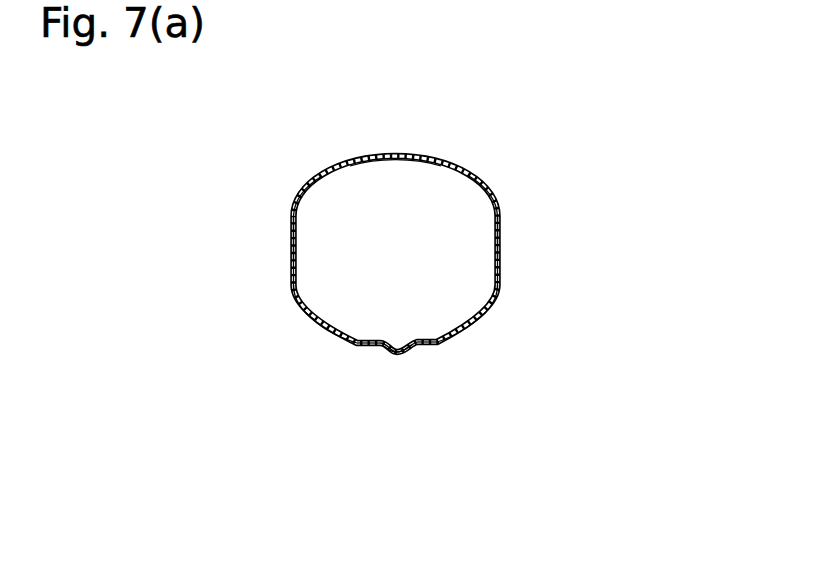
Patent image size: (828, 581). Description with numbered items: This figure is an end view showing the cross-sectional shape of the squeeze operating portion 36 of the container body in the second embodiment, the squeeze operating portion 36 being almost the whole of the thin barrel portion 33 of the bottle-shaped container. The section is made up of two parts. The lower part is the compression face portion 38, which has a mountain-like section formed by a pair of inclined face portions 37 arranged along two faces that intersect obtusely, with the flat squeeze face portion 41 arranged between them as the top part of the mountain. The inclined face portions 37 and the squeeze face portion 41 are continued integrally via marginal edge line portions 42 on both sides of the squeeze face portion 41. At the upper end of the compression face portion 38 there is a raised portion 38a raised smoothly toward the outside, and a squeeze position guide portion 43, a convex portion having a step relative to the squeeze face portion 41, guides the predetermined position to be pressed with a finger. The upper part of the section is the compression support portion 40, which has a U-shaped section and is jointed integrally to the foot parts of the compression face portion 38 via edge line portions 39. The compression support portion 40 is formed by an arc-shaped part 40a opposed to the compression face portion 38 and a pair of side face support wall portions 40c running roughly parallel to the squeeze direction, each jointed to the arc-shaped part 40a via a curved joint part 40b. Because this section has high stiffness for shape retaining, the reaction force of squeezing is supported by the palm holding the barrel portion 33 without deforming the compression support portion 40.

The compression support portion 40 is at (447, 157).
The arc-shaped part 40a is at (357, 156).
The curved joint part 40b is at (305, 182).
The side face support wall portion 40c is at (290, 260).
The barrel portion 33 is at (290, 220).
The squeeze operating portion 36 is at (503, 230).
The inclined face portion 37 is at (307, 328).
The compression face portion 38 is at (345, 346).
The raised portion 38a is at (430, 347).
The edge line portion 39 is at (293, 314).
The squeeze face portion 41 is at (375, 356).
The marginal edge line portion 42 is at (423, 340).
The squeeze position guide portion 43 is at (406, 357).